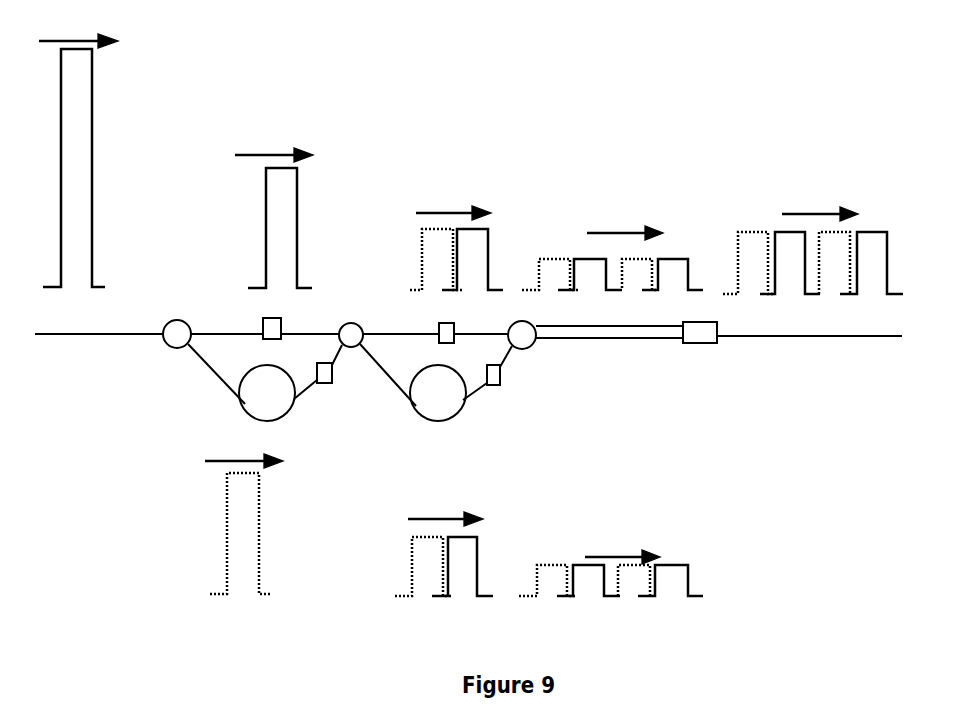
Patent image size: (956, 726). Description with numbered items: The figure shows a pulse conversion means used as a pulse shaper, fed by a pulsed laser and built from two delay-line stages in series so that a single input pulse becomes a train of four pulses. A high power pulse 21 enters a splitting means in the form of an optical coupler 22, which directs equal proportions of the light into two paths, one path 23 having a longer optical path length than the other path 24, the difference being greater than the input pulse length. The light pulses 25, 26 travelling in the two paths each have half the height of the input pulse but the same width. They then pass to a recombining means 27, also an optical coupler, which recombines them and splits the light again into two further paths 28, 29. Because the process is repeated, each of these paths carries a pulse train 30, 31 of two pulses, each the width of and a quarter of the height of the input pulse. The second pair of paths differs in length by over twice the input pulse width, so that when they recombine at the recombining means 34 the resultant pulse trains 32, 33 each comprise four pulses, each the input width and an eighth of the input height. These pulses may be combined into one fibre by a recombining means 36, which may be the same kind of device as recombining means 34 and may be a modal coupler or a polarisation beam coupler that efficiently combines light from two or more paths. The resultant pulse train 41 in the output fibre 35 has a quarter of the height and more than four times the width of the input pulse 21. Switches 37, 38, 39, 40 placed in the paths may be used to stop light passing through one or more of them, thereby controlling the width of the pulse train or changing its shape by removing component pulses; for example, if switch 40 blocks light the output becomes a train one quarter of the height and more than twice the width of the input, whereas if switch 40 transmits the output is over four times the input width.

The high power pulse 21 is at (79, 103).
The optical coupler 22 is at (175, 332).
The path 23 is at (193, 357).
The path 24 is at (223, 326).
The light pulse 25 is at (287, 220).
The light pulse 26 is at (242, 532).
The recombining means 27 is at (350, 334).
The path 28 is at (382, 328).
The path 29 is at (473, 405).
The pulse train 30 is at (473, 267).
The pulse train 31 is at (462, 568).
The resultant pulse train 32 is at (556, 274).
The resultant pulse train 33 is at (670, 580).
The recombining means 34 is at (527, 340).
The output fibre 35 is at (782, 337).
The recombining means 36 is at (700, 333).
The switch 37 is at (266, 339).
The switch 38 is at (323, 383).
The switch 39 is at (441, 343).
The switch 40 is at (502, 385).
The resultant pulse train 41 is at (763, 262).